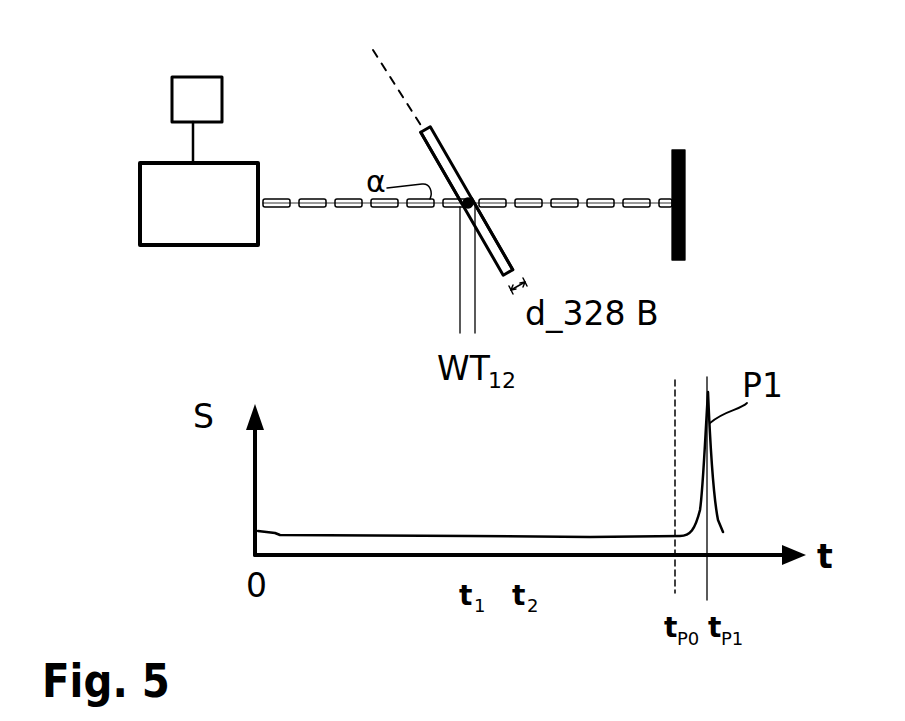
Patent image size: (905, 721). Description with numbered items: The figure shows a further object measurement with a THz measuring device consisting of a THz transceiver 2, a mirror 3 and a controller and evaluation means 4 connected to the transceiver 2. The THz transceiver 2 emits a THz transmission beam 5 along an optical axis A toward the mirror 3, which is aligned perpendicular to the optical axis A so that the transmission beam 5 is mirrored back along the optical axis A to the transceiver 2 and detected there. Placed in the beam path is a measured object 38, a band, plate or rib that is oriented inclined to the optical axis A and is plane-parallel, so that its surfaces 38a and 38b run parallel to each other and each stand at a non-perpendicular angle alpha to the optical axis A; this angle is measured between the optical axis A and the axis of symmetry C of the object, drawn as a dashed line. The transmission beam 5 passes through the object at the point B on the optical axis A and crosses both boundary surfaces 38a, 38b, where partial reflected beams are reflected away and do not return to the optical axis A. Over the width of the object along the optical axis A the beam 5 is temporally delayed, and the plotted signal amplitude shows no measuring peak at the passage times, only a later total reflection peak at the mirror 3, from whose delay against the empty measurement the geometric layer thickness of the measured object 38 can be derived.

The THz transceiver 2 is at (148, 245).
The mirror 3 is at (685, 172).
The controller and evaluation means 4 is at (222, 99).
The THz transmission beam 5 is at (275, 198).
The measured object 38 is at (443, 143).
The first surface of the measured object 38a is at (421, 146).
The second surface of the measured object 38b is at (500, 237).
The optical axis A is at (293, 207).
The intersection point B is at (470, 198).
The axis of symmetry C is at (394, 78).